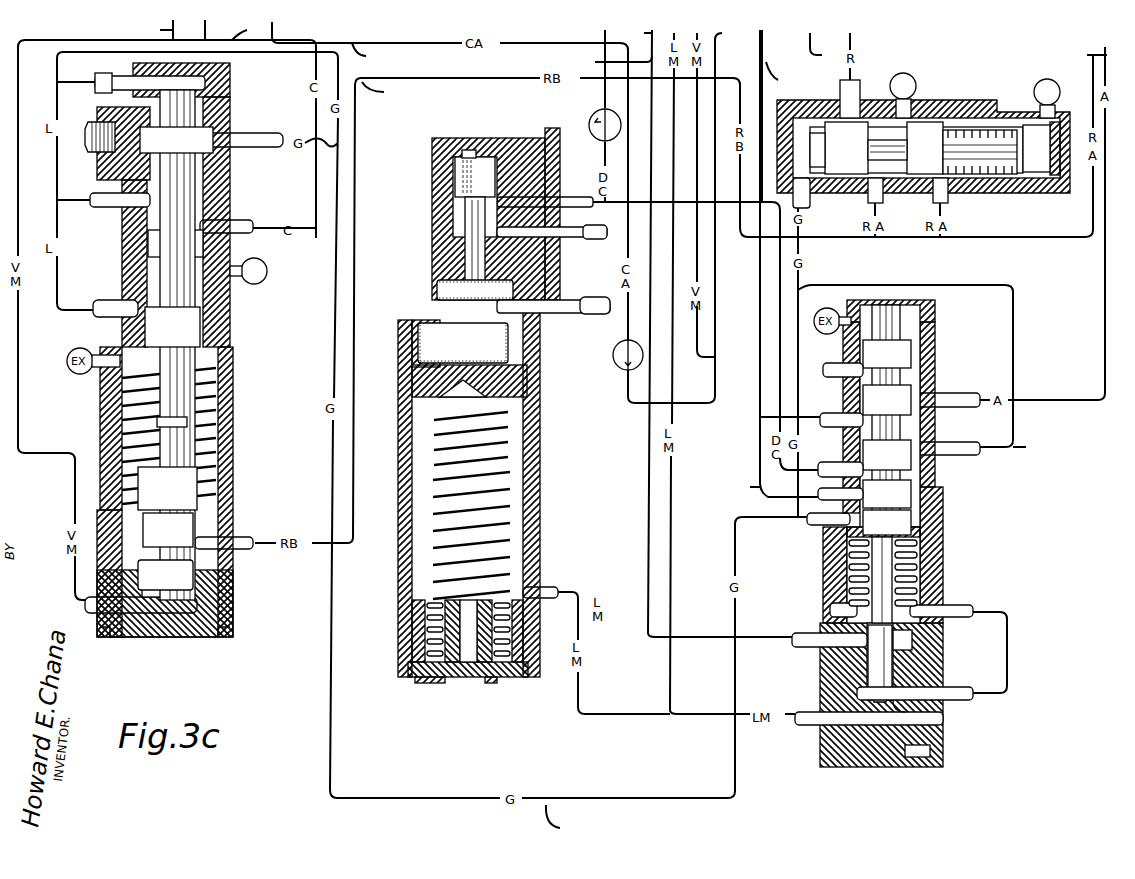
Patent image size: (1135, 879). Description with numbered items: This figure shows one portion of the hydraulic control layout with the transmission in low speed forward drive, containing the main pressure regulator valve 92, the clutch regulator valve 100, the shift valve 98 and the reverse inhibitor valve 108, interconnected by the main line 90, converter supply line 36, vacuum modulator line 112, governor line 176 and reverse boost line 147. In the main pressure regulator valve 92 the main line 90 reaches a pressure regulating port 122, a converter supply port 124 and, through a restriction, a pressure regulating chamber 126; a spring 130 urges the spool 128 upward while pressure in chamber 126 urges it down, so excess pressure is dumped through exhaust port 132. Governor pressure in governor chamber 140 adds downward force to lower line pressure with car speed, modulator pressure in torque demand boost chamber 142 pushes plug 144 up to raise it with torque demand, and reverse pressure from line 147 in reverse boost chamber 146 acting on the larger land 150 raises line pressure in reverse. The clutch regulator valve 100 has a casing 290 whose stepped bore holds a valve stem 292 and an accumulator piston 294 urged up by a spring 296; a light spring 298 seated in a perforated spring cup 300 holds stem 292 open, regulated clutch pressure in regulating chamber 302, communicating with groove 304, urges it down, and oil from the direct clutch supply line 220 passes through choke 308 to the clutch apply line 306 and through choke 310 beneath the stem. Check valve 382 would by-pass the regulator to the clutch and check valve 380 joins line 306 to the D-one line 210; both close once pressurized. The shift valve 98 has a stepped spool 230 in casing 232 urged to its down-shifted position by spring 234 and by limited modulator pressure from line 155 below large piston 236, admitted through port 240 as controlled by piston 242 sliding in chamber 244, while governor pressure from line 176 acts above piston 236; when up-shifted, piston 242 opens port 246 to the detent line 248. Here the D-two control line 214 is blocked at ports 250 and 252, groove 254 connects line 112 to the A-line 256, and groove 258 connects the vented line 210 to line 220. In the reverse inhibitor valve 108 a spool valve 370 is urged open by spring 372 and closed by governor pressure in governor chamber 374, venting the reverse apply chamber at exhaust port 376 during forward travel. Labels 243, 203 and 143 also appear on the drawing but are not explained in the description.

The main pressure regulator valve 92 is at (191, 372).
The clutch regulator valve 100 is at (479, 438).
The shift valve 98 is at (881, 557).
The reverse inhibitor valve 108 is at (923, 120).
The converter supply line 36 is at (268, 245).
The main line 90 is at (58, 333).
The vacuum modulator line 112 is at (76, 638).
The governor line 176 is at (780, 538).
The clutch apply line 306 is at (626, 303).
The reverse boost line 147 is at (258, 551).
The limited vacuum modulator line 155 is at (800, 727).
The line 243 is at (606, 116).
The direct clutch supply line 220 is at (606, 202).
The Drive-1 line 210 is at (699, 413).
The accumulator supply line 256 is at (1103, 360).
The Drive-2 control line 214 is at (784, 116).
The governor chamber 140 is at (125, 168).
The pressure regulating chamber 126 is at (197, 80).
The converter supply port 124 is at (200, 201).
The valve stem 128 is at (152, 244).
The exhaust port 132 is at (262, 285).
The pressure regulating port 122 is at (195, 309).
The spring 130 is at (205, 389).
The land 150 is at (170, 486).
The reverse boost chamber 146 is at (190, 524).
The plug 144 is at (190, 594).
The torque demand boost chamber 142 is at (190, 626).
The regulating chamber 302 is at (452, 166).
The valve stem 292 is at (460, 155).
The groove 304 is at (463, 211).
The light spring 298 is at (436, 290).
The perforated spring cup 300 is at (432, 325).
The casing 290 is at (530, 393).
The accumulator piston 294 is at (520, 411).
The spring 296 is at (510, 522).
The choke 308 is at (573, 240).
The choke 310 is at (610, 318).
The check valve 382 is at (592, 117).
The check valve 380 is at (616, 366).
The stepped spool 230 is at (905, 329).
The casing 232 is at (958, 579).
The groove 254 is at (865, 386).
The D2 low port 250 is at (922, 428).
The groove 258 is at (930, 476).
The D2 low port 252 is at (945, 500).
The large piston 236 is at (935, 540).
The spring 234 is at (842, 581).
The port 246 is at (905, 641).
The piston 242 is at (890, 669).
The port 240 is at (855, 691).
The chamber 244 is at (943, 723).
The detent line 248 is at (778, 648).
The spool valve 370 is at (885, 180).
The governor chamber 374 is at (812, 196).
The spring 372 is at (1000, 190).
The port 203 is at (862, 72).
The exhaust port 376 is at (905, 74).
The exhaust port 143 is at (1058, 98).